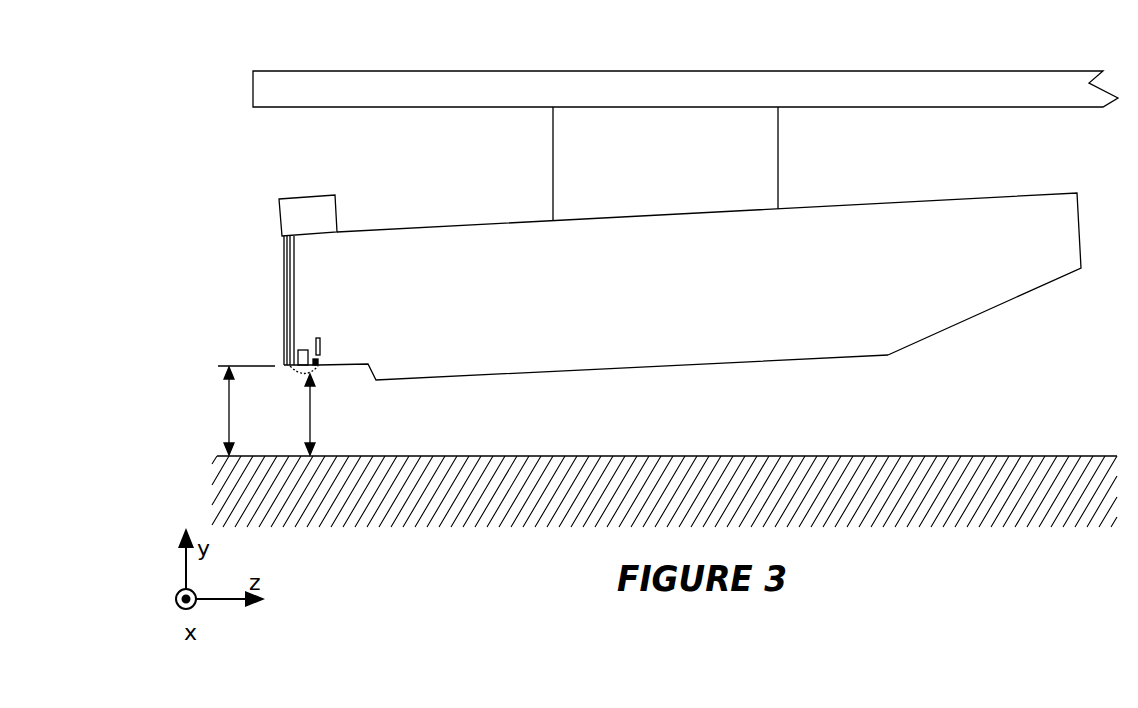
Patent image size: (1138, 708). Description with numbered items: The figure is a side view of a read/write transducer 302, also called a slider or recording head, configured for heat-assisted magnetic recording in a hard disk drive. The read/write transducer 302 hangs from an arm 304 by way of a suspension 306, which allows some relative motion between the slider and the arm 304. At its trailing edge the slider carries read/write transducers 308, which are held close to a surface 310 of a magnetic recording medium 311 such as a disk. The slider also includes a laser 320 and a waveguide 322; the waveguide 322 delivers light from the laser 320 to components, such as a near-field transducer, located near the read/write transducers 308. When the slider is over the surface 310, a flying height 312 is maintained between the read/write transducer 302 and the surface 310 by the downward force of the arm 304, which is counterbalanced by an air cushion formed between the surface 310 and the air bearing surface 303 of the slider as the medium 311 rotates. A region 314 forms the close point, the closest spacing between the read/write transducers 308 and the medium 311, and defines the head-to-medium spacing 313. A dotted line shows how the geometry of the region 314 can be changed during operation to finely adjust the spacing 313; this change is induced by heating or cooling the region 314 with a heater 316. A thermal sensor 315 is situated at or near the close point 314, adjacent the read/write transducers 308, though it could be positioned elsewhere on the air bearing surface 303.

The read/write transducer 302 is at (945, 208).
The air bearing surface 303 is at (499, 377).
The arm 304 is at (1010, 80).
The suspension 306 is at (777, 154).
The read/write transducers 308 is at (300, 352).
The surface 310 is at (950, 456).
The magnetic recording medium 311 is at (967, 507).
The flying height 312 is at (226, 410).
The head-to-medium spacing 313 is at (288, 414).
The close point region 314 is at (318, 375).
The thermal sensor 315 is at (318, 362).
The heater 316 is at (318, 342).
The laser 320 is at (307, 207).
The waveguide 322 is at (288, 272).